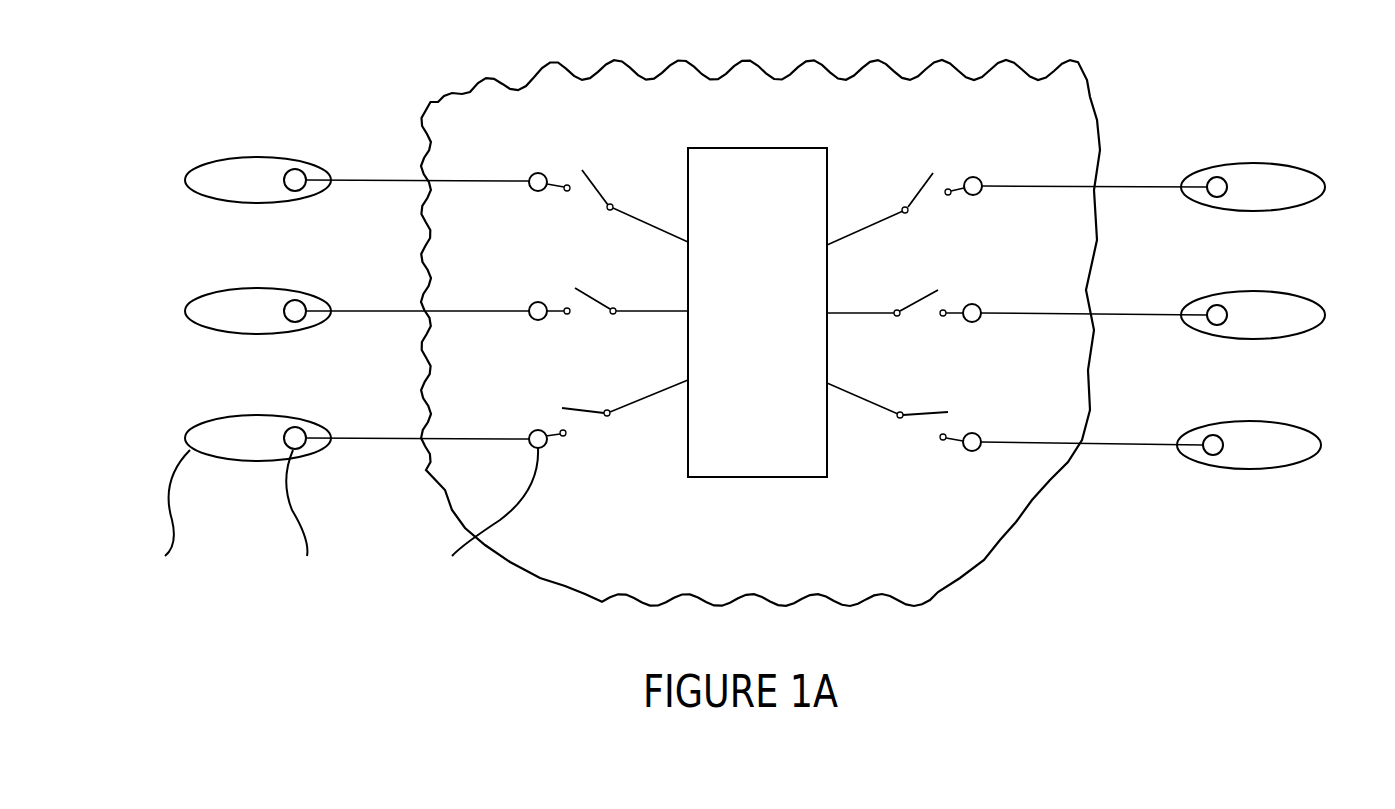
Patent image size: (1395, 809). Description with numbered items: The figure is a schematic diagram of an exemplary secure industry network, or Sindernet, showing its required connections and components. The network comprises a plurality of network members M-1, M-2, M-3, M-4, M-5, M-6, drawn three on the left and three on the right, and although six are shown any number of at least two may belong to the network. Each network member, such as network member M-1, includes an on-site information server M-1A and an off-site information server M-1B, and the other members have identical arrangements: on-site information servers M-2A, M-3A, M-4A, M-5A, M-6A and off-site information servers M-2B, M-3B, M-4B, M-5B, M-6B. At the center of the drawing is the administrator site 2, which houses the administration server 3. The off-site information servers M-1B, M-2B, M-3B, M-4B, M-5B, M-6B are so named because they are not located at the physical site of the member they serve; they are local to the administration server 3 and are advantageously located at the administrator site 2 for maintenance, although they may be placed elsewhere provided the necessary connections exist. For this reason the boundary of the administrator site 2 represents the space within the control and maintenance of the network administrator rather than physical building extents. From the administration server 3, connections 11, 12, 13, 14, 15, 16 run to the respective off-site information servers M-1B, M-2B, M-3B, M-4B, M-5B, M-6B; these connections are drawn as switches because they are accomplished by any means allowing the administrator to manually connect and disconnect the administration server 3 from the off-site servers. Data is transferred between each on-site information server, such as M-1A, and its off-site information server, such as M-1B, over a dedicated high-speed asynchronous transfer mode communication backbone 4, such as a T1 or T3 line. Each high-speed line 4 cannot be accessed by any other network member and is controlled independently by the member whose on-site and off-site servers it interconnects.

The administrator site 2 is at (678, 56).
The administration server 3 is at (775, 145).
The high-speed asynchronous transfer mode communication backbone 4 is at (415, 178).
The connection 11 is at (600, 165).
The connection 12 is at (600, 290).
The connection 13 is at (590, 391).
The connection 14 is at (920, 165).
The connection 15 is at (914, 292).
The connection 16 is at (918, 390).
The network member M-1 is at (184, 178).
The network member M-2 is at (184, 309).
The network member M-3 is at (184, 436).
The network member M-4 is at (1329, 189).
The network member M-5 is at (1329, 317).
The network member M-6 is at (1325, 447).
The on-site information server M-1A is at (282, 178).
The on-site information server M-2A is at (282, 309).
The on-site information server M-3A is at (282, 436).
The on-site information server M-4A is at (1231, 189).
The on-site information server M-5A is at (1231, 317).
The on-site information server M-6A is at (1227, 447).
The off-site information server M-1B is at (528, 181).
The off-site information server M-2B is at (528, 310).
The off-site information server M-3B is at (528, 438).
The off-site information server M-4B is at (984, 187).
The off-site information server M-5B is at (983, 314).
The off-site information server M-6B is at (983, 443).